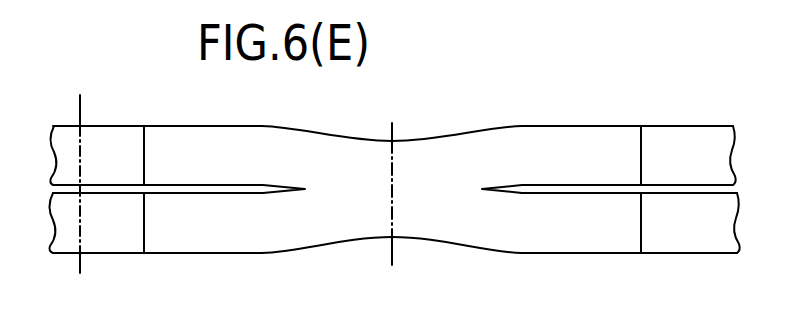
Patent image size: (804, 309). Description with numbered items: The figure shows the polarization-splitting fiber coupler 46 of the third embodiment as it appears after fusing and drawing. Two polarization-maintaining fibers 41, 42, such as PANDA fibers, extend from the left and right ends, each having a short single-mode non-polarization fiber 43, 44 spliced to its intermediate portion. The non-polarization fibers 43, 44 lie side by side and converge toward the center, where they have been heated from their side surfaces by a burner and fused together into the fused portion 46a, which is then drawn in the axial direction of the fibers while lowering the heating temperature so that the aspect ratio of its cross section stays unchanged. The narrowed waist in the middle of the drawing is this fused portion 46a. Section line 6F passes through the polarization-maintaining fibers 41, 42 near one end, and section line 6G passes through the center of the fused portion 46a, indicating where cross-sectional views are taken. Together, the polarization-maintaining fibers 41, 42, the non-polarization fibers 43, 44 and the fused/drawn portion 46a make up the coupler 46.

The polarization-maintaining fiber 41 is at (101, 125).
The polarization-maintaining fiber 42 is at (118, 254).
The non-polarization fiber 43 is at (205, 126).
The non-polarization fiber 44 is at (217, 255).
The polarization-splitting fiber coupler 46 is at (533, 125).
The fused portion 46a is at (345, 134).
The section line 6F is at (81, 183).
The section line 6G is at (408, 195).